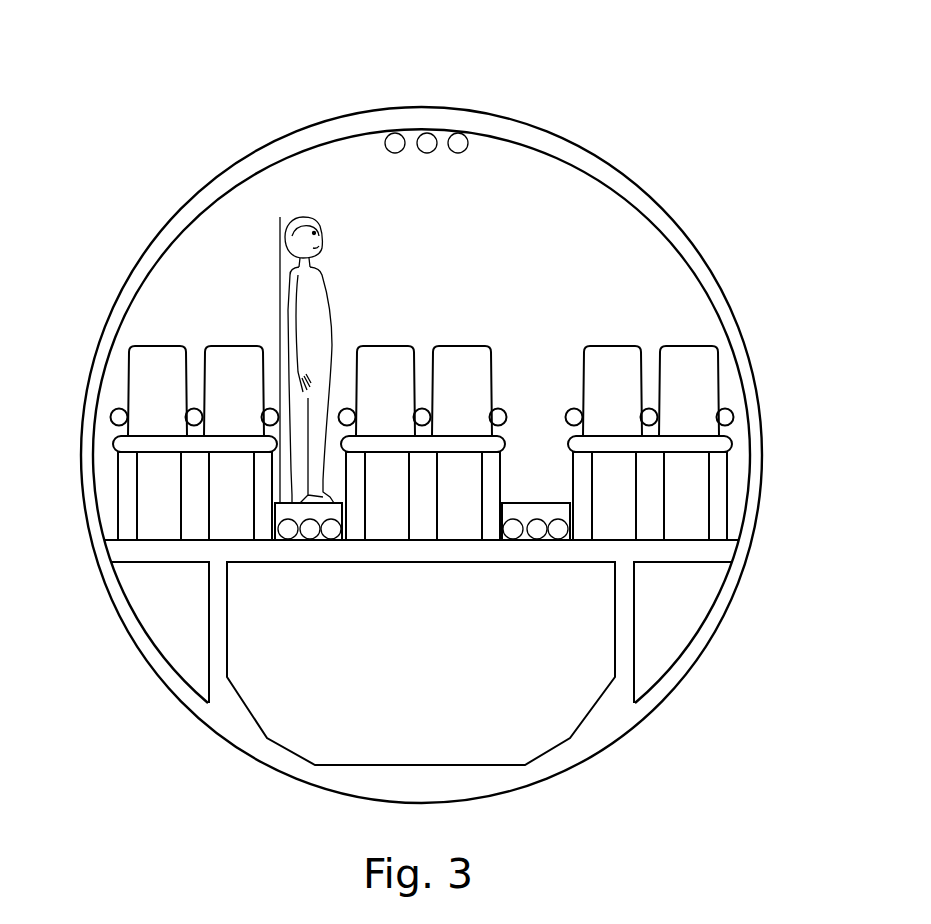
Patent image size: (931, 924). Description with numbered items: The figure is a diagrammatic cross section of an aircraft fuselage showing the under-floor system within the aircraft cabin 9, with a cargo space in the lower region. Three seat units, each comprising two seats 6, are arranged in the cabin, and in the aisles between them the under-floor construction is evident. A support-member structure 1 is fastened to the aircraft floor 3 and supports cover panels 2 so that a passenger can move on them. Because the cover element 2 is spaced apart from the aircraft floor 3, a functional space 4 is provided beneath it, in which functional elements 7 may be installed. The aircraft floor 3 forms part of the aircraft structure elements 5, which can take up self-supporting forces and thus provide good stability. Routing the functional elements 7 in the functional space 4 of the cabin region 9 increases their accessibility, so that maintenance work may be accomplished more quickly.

The support-member structure 1 is at (570, 535).
The cover element 2 is at (543, 503).
The aircraft floor 3 is at (718, 552).
The functional space 4 is at (127, 505).
The aircraft structure elements 5 is at (88, 444).
The seats 6 is at (162, 368).
The functional elements 7 is at (395, 134).
The aircraft cabin 9 is at (583, 250).